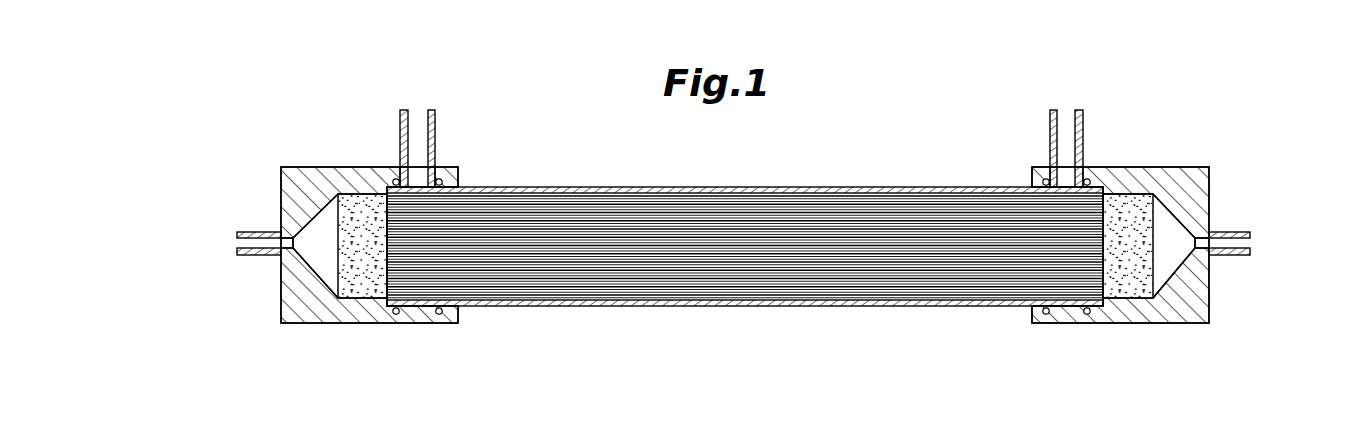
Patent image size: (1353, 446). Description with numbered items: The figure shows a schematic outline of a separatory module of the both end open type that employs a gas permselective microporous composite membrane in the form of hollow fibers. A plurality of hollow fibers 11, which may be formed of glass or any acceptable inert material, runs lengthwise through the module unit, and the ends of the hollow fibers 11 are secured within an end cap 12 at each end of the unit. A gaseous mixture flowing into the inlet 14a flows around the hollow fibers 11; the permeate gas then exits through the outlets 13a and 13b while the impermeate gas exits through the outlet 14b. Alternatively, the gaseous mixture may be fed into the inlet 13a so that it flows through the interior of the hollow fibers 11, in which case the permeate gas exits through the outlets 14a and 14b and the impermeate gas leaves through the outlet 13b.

The hollow fibers 11 is at (737, 292).
The end cap 12 is at (1125, 287).
The inlet 13a is at (237, 241).
The outlet 13b is at (1250, 241).
The inlet 14a is at (419, 110).
The outlet 14b is at (1070, 110).